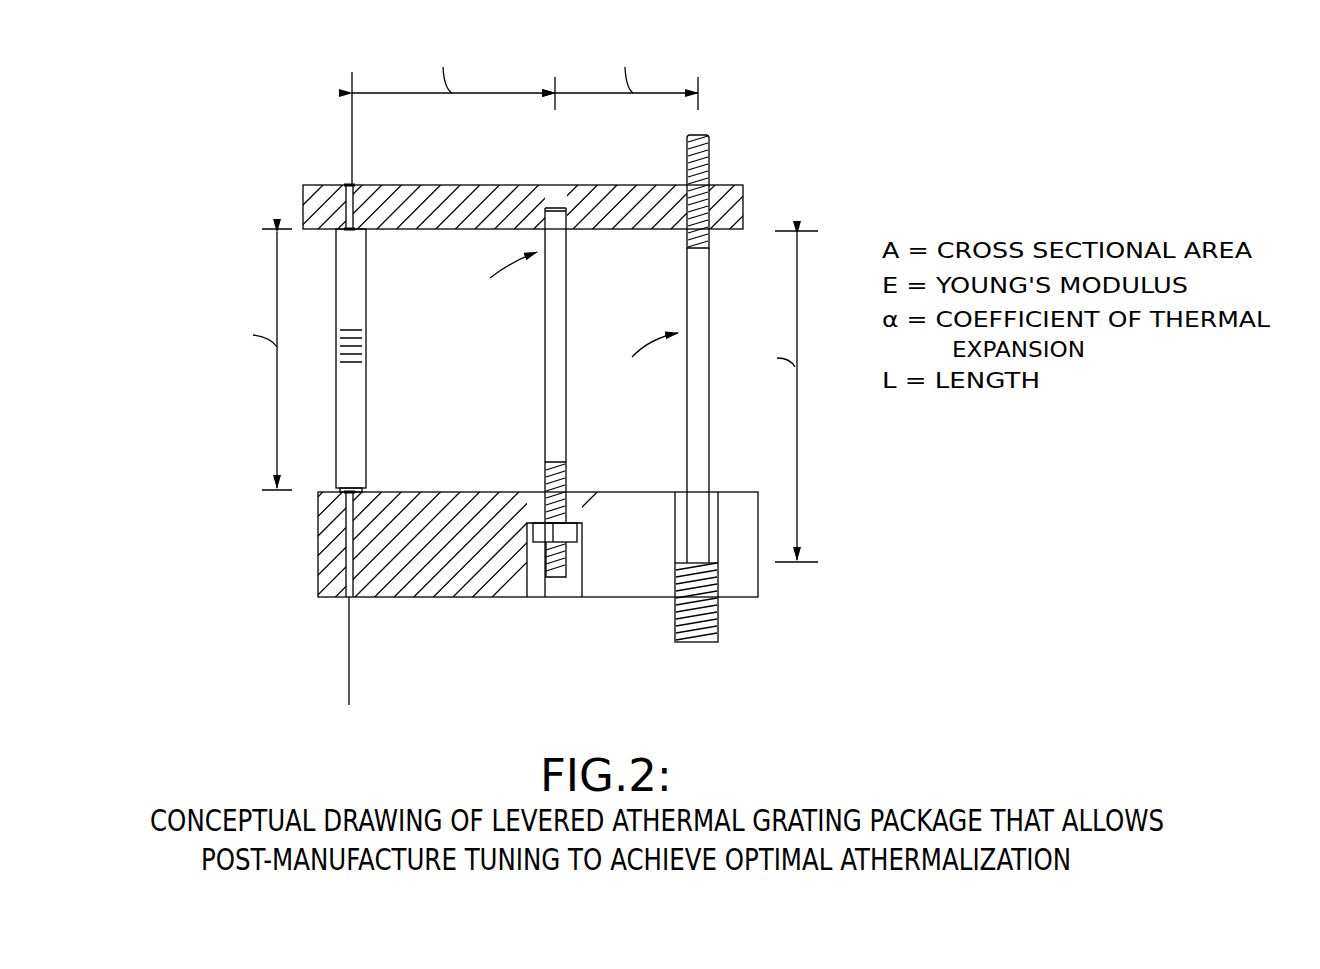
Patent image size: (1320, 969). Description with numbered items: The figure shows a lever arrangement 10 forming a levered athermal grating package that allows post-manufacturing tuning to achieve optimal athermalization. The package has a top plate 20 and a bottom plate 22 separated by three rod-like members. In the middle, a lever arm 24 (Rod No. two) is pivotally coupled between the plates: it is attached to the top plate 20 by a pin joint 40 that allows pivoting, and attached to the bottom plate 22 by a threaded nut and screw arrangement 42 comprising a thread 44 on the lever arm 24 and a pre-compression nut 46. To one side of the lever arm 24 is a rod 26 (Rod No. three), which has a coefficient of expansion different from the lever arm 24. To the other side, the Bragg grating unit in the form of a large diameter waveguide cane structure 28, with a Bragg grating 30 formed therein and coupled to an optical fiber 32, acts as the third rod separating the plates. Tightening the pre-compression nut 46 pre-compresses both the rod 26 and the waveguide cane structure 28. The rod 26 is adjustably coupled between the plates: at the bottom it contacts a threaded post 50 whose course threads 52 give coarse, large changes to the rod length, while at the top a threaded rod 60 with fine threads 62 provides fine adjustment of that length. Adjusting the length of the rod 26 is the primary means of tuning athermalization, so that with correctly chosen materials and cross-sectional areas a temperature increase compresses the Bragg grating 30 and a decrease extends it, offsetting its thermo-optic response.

The lever arrangement 10 is at (240, 68).
The top plate 20 is at (743, 203).
The bottom plate 22 is at (758, 586).
The lever arm 24 is at (566, 300).
The rod 26 is at (709, 302).
The large diameter waveguide cane structure 28 is at (267, 508).
The Bragg grating 30 is at (366, 358).
The optical fiber 32 is at (348, 613).
The pin joint 40 is at (556, 208).
The threaded nut and screw arrangement 42 is at (537, 483).
The thread 44 is at (566, 472).
The pre-compression nut 46 is at (532, 543).
The threaded post 50 is at (718, 615).
The course threads 52 is at (697, 643).
The threaded rod 60 is at (703, 134).
The fine threads 62 is at (708, 172).